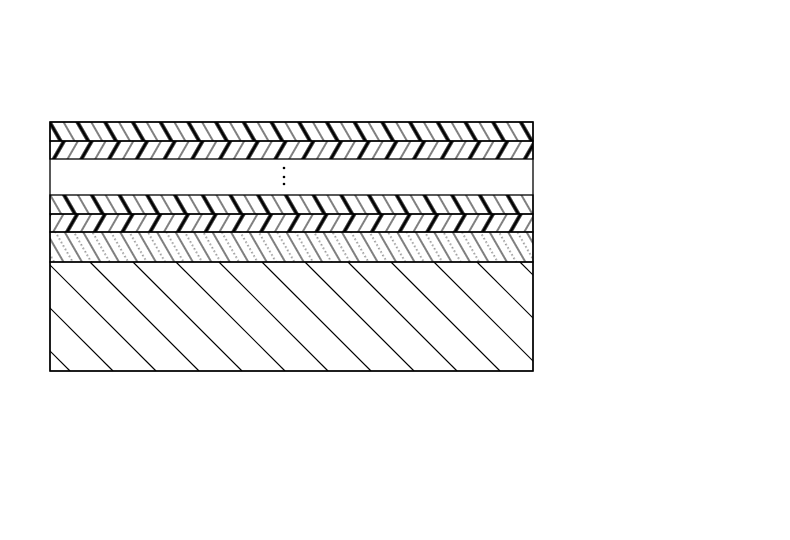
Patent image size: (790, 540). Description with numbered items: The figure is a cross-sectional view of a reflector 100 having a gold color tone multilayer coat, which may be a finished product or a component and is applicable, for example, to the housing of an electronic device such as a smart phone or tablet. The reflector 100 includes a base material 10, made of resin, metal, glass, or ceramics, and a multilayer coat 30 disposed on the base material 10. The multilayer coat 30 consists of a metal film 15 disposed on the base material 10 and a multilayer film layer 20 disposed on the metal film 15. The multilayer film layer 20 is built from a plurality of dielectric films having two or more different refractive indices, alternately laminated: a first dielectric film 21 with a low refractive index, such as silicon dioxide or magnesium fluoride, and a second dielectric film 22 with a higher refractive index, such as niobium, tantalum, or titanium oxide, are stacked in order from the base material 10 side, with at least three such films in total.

The reflector 100 is at (295, 86).
The base material 10 is at (522, 318).
The metal film 15 is at (533, 249).
The multilayer film layer 20 is at (598, 109).
The first dielectric film 21 is at (533, 150).
The second dielectric film 22 is at (533, 131).
The multilayer coat 30 is at (656, 155).